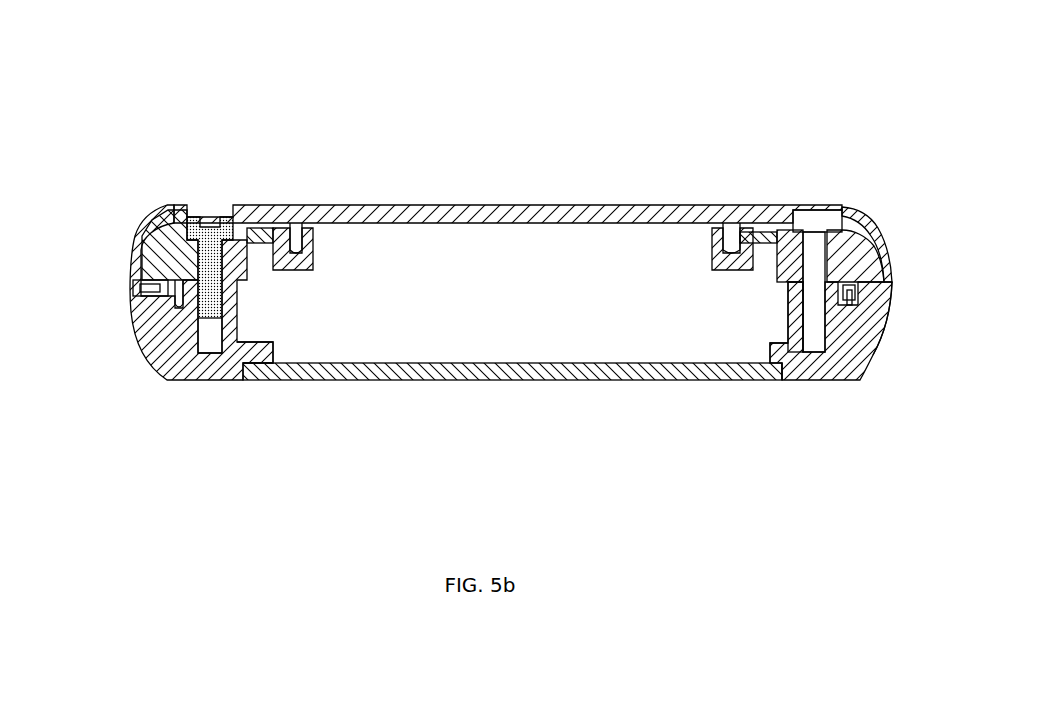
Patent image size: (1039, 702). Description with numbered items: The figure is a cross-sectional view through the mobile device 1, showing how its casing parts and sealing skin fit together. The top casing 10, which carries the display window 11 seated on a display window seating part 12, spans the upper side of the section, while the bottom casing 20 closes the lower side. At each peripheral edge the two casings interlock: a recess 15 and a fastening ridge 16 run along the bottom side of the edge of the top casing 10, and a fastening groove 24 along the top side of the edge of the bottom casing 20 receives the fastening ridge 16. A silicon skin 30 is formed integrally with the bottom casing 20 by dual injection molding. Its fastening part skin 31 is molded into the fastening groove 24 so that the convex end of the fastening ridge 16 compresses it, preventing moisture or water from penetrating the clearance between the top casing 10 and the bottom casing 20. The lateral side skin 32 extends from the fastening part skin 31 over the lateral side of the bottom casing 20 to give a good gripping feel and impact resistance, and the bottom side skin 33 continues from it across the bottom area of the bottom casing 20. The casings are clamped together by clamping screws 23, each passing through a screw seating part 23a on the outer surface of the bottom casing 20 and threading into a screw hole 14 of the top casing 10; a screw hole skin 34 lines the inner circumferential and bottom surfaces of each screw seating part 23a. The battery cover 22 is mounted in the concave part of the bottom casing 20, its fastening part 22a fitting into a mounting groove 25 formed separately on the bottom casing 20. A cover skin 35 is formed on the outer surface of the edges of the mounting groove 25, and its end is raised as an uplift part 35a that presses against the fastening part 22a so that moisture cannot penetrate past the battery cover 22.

The mobile device 1 is at (411, 178).
The top casing 10 is at (858, 370).
The display window 11 is at (521, 381).
The display window seating part 12 is at (776, 378).
The screw hole 14 is at (820, 332).
The recess 15 is at (173, 310).
The fastening ridge 16 is at (162, 297).
The bottom casing 20 is at (882, 232).
The battery cover 22 is at (487, 205).
The fastening part 22a is at (289, 362).
The clamping screw 23 is at (220, 210).
The screw seating part 23a is at (807, 226).
The fastening groove 24 is at (165, 277).
The mounting groove 25 is at (300, 228).
The silicon skin 30 is at (900, 268).
The fastening part skin 31 is at (886, 295).
The lateral side skin 32 is at (870, 303).
The bottom side skin 33 is at (766, 238).
The screw hole skin 34 is at (857, 264).
The cover skin 35 is at (738, 222).
The uplift part 35a is at (725, 250).